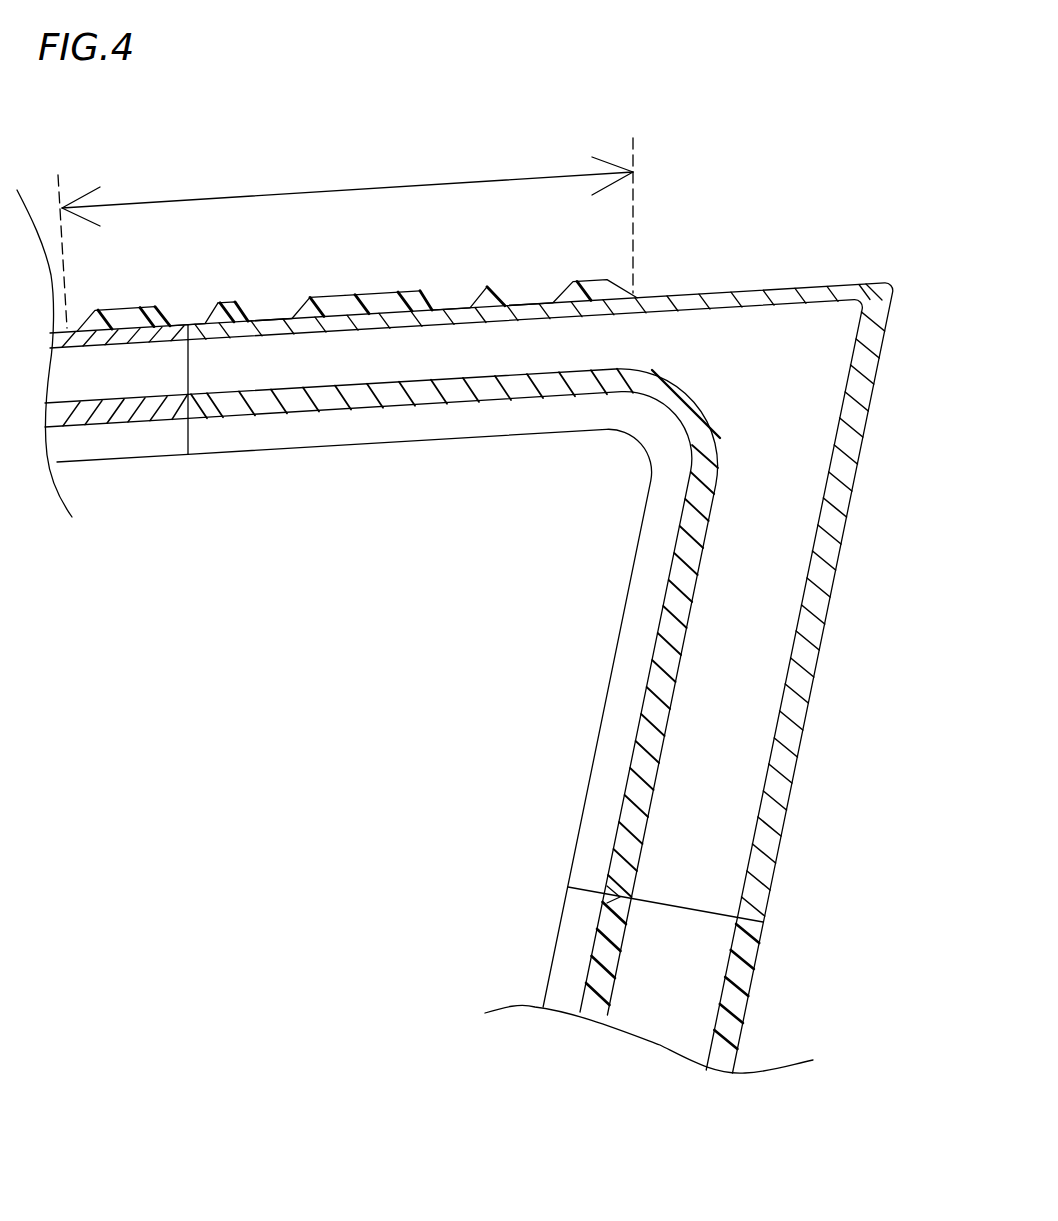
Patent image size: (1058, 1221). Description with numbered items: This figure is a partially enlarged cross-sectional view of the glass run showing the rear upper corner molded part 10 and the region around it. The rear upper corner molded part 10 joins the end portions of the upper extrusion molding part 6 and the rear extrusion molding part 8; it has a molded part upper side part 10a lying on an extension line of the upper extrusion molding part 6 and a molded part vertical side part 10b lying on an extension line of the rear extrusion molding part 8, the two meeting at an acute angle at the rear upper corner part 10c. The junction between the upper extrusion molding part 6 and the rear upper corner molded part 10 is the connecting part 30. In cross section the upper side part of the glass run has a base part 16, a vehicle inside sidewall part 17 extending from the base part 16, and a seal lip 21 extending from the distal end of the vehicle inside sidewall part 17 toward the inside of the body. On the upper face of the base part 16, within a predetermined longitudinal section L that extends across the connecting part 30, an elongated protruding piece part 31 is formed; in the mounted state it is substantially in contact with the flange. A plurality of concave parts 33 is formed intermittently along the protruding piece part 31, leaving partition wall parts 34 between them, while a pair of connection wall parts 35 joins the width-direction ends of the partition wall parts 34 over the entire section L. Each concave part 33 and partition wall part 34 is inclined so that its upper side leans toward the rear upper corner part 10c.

The upper extrusion molding part 6 is at (122, 462).
The rear extrusion molding part 8 is at (552, 948).
The rear upper corner molded part 10 is at (822, 174).
The molded part upper side part 10a is at (748, 288).
The molded part vertical side part 10b is at (827, 620).
The rear upper corner part 10c is at (888, 278).
The base part 16 is at (577, 315).
The vehicle inside sidewall part 17 is at (295, 367).
The seal lip 21 is at (466, 420).
The connecting part 30 is at (189, 440).
The protruding piece part 31 is at (512, 251).
The concave part 33 is at (205, 321).
The partition wall part 34 is at (162, 304).
The connection wall part 35 is at (367, 293).
The predetermined longitudinal section L is at (347, 190).